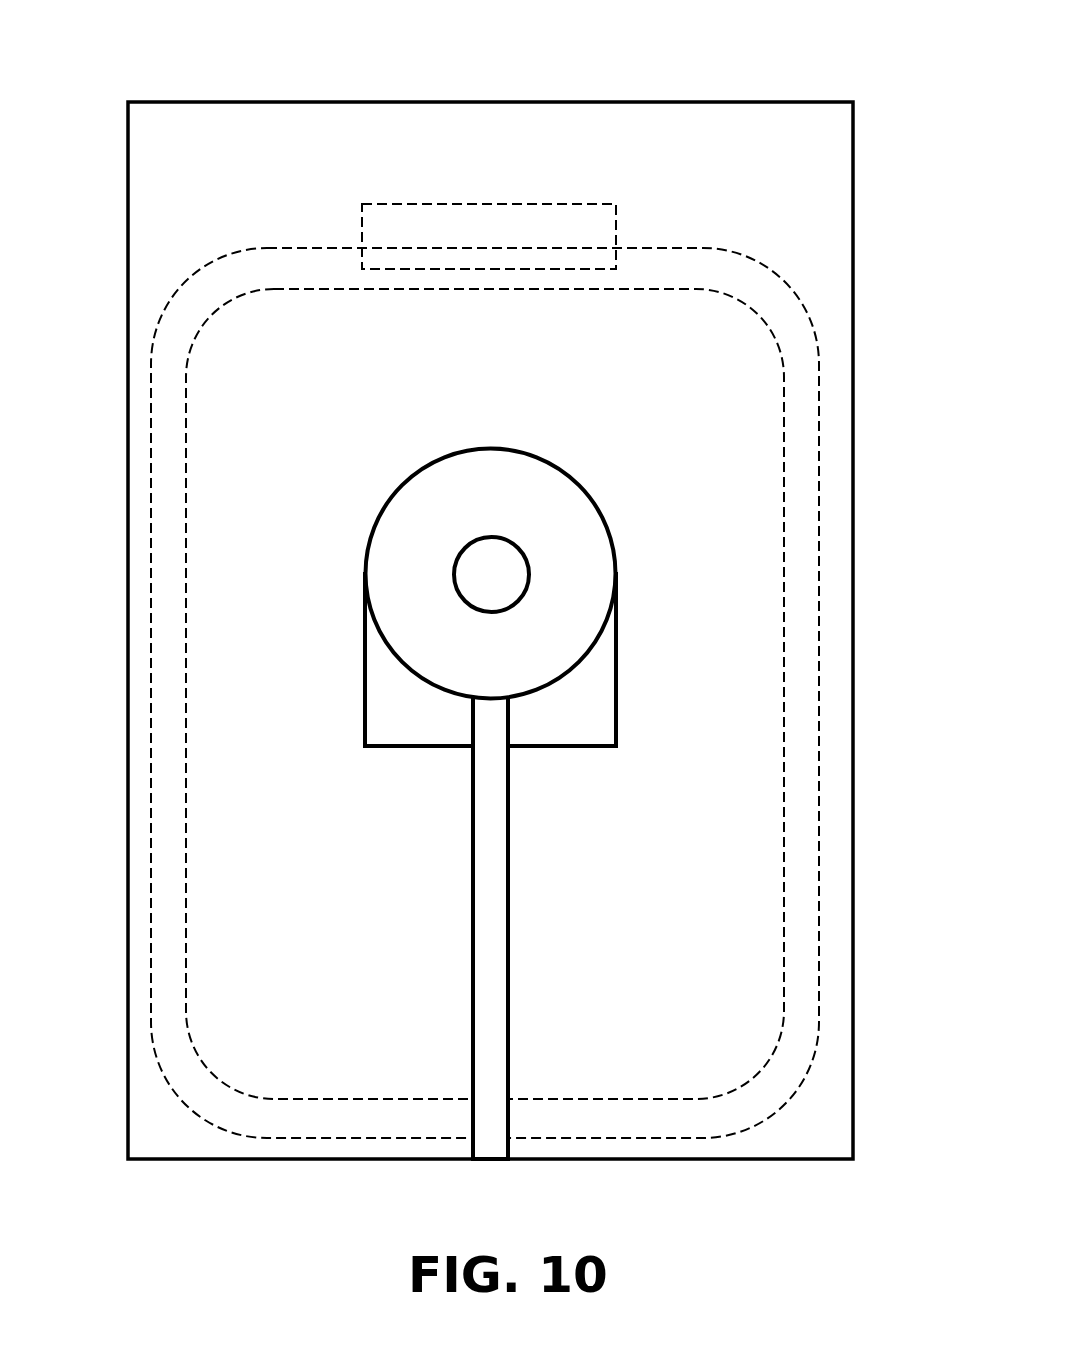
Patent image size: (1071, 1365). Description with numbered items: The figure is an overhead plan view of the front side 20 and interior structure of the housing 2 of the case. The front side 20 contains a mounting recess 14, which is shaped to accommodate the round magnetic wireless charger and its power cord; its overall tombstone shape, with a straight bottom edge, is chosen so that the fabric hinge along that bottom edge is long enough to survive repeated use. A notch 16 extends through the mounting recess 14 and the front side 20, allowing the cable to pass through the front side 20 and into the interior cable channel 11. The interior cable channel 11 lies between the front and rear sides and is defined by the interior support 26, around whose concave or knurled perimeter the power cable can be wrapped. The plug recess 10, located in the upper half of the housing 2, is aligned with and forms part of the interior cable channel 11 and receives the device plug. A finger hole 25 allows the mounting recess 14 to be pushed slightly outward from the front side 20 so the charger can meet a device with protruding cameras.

The housing 2 is at (488, 579).
The plug recess 10 is at (507, 243).
The interior cable channel 11 is at (752, 290).
The mounting recess 14 is at (649, 761).
The notch 16 is at (508, 860).
The front side 20 is at (227, 181).
The finger hole 25 is at (480, 573).
The interior support 26 is at (303, 415).